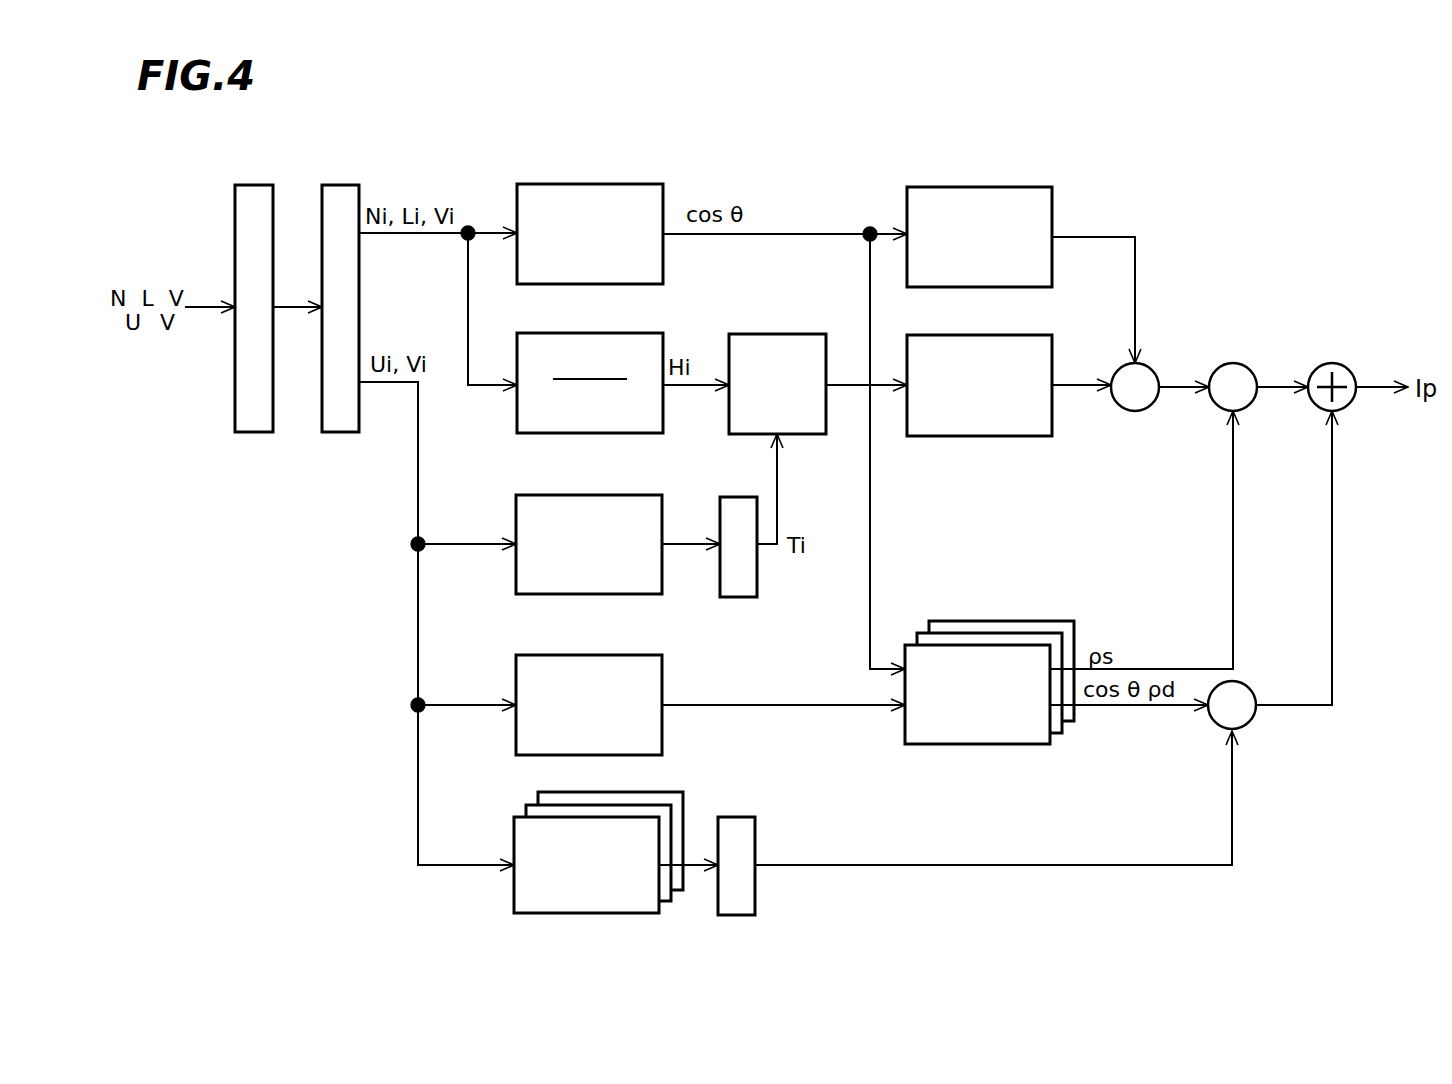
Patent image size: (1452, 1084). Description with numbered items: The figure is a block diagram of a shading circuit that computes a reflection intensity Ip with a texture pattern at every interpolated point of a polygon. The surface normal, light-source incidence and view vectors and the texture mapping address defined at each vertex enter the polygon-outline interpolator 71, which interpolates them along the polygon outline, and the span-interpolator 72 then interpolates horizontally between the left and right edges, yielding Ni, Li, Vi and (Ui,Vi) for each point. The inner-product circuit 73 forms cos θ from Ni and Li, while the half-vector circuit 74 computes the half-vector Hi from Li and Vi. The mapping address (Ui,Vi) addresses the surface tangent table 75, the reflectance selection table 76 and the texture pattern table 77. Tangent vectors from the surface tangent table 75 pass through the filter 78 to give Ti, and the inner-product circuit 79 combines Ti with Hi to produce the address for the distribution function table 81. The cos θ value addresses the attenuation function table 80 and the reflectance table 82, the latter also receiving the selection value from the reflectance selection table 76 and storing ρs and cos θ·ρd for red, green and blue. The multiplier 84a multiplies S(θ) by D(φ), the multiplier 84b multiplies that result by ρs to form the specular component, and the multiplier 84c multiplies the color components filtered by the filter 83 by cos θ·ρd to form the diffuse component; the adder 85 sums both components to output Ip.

The polygon-outline interpolator 71 is at (253, 185).
The span-interpolator 72 is at (343, 185).
The inner-product circuit 73 is at (605, 184).
The half-vector circuit 74 is at (640, 333).
The surface tangent table 75 is at (533, 495).
The reflectance selection table 76 is at (533, 655).
The texture pattern table 77 is at (519, 817).
The filter 78 is at (737, 497).
The inner-product circuit 79 is at (785, 334).
The attenuation function table 80 is at (1015, 187).
The distribution function table 81 is at (1015, 335).
The reflectance table 82 is at (1035, 621).
The filter 83 is at (738, 817).
The multiplier 84a is at (1152, 368).
The multiplier 84b is at (1250, 368).
The multiplier 84c is at (1249, 687).
The adder 85 is at (1349, 368).